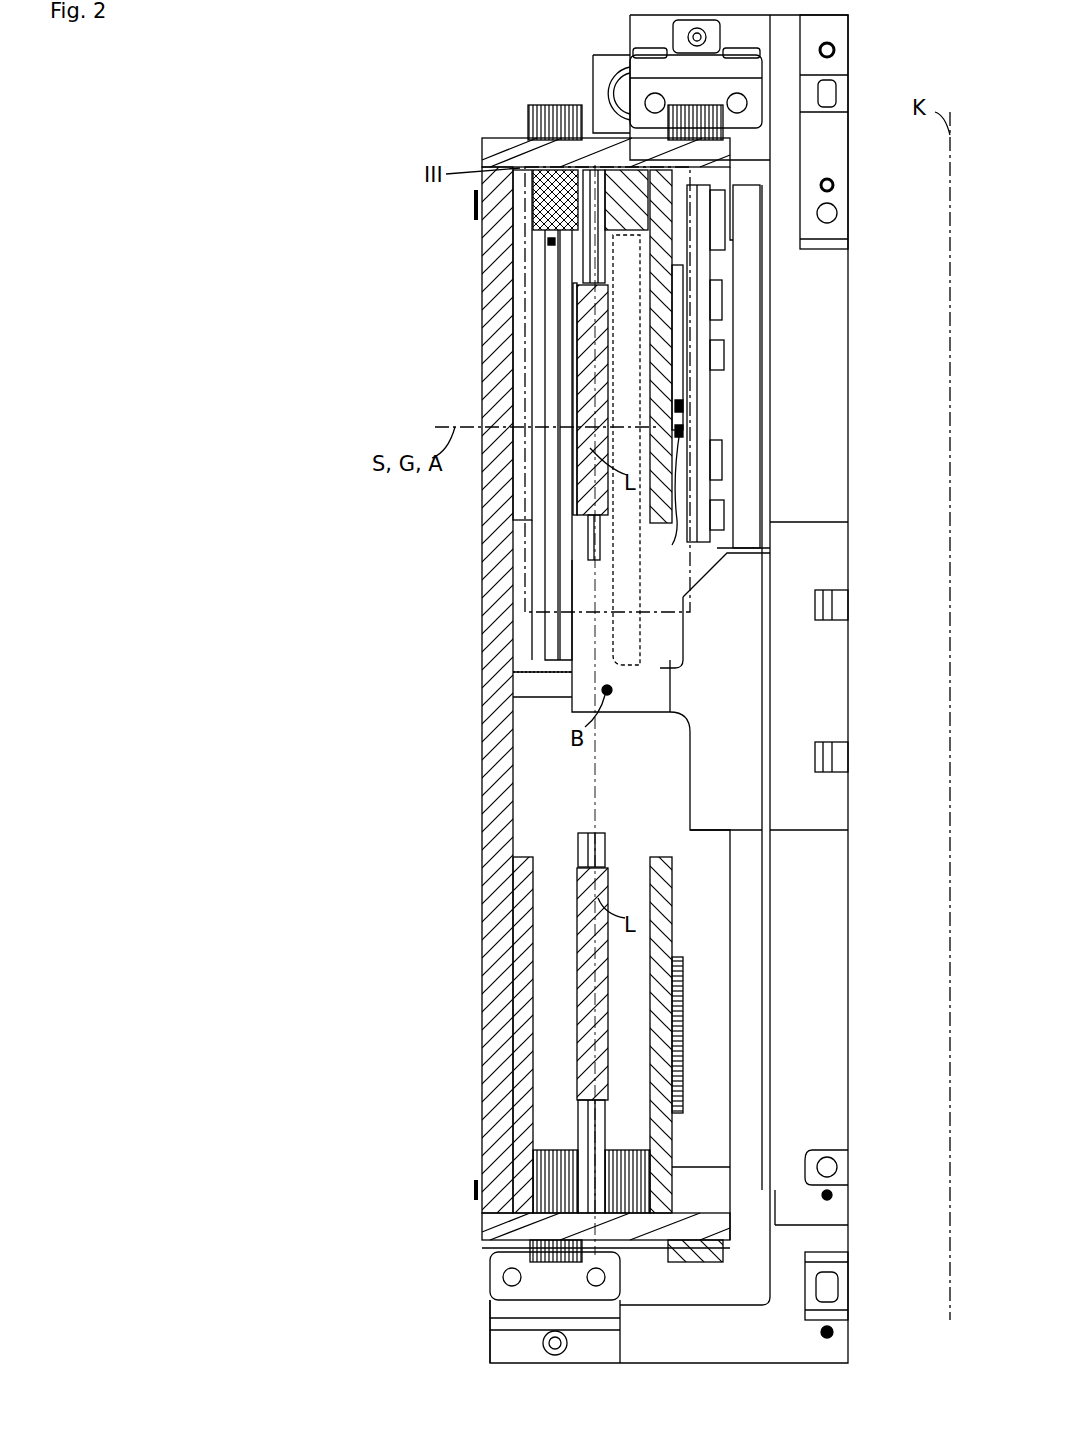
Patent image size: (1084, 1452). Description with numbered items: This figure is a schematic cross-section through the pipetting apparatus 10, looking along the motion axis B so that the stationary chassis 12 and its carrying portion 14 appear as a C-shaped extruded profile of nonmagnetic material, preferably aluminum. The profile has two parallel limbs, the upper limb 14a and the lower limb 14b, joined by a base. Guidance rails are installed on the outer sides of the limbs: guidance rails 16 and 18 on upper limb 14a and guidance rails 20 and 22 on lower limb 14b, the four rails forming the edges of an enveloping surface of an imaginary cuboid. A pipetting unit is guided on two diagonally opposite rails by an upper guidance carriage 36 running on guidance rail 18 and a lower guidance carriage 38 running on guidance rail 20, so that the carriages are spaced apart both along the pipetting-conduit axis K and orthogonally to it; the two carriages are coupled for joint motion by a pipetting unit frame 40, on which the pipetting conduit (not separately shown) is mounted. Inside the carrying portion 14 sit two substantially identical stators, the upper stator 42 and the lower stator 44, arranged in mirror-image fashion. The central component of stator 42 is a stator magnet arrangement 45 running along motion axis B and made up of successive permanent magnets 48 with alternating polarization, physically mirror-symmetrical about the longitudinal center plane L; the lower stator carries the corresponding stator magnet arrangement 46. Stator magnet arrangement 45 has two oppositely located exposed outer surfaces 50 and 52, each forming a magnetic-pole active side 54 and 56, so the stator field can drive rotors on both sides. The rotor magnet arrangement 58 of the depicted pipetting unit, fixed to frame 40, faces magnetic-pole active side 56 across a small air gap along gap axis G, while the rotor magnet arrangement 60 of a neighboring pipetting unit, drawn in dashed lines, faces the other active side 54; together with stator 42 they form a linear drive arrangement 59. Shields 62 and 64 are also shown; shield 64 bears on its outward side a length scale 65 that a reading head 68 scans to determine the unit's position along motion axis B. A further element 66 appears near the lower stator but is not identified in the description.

The pipetting apparatus 10 is at (190, 135).
The chassis 12 is at (410, 665).
The carrying portion 14 is at (482, 590).
The upper limb 14a is at (523, 150).
The lower limb 14b is at (650, 1240).
The guidance rail 16 is at (533, 108).
The guidance rail 18 is at (723, 135).
The guidance rail 20 is at (548, 1240).
The guidance rail 22 is at (715, 1260).
The upper guidance carriage 36 is at (755, 100).
The lower guidance carriage 38 is at (497, 1278).
The pipetting unit frame 40 is at (732, 700).
The stator 42 is at (597, 565).
The stator 44 is at (560, 852).
The stator magnet arrangement 45 is at (615, 540).
The stator magnet arrangement 46 is at (563, 950).
The permanent magnets 48 is at (583, 322).
The exposed outer surface 50 is at (607, 352).
The exposed outer surface 52 is at (577, 389).
The magnetic-pole active side 54 is at (613, 333).
The magnetic-pole active side 56 is at (568, 412).
The rotor magnet arrangement 58 is at (548, 508).
The linear drive arrangement 59 is at (533, 345).
The rotor magnet arrangement 60 is at (642, 538).
The shield 62 is at (523, 317).
The shield 64 is at (660, 240).
The length scale 65 is at (675, 525).
The magnet 66 is at (690, 1005).
The reading head 68 is at (693, 415).